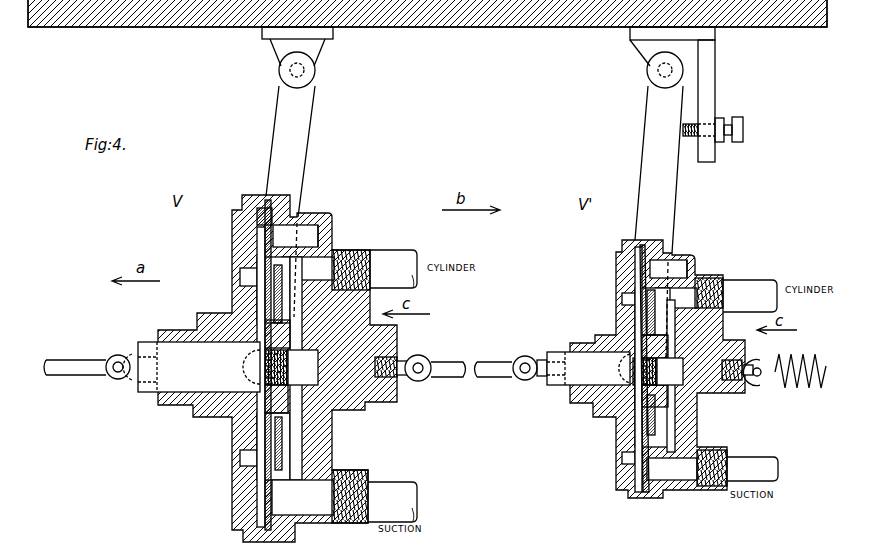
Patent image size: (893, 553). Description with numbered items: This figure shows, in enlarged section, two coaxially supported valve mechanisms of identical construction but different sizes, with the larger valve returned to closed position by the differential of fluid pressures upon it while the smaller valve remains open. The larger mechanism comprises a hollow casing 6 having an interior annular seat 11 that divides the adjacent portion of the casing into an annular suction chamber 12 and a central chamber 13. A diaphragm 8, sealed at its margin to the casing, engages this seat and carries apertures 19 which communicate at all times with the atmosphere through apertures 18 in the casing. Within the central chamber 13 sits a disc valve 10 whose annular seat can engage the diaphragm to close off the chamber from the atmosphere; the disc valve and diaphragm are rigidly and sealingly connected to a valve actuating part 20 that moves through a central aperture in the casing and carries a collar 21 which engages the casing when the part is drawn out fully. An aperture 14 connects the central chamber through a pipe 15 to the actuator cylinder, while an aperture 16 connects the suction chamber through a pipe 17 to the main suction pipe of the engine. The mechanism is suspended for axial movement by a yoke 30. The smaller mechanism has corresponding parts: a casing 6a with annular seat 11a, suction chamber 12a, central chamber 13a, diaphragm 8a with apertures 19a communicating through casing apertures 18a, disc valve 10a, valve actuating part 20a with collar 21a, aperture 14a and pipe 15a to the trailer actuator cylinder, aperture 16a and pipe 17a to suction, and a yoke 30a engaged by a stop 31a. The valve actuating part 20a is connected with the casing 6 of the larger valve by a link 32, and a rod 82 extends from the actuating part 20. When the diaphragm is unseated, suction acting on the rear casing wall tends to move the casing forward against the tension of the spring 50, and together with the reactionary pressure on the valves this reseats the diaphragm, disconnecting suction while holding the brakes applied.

The hollow casing 6 is at (302, 222).
The diaphragm 8 is at (262, 243).
The disc valve 10 is at (286, 298).
The annular seat 11 is at (333, 229).
The annular suction chamber 12 is at (306, 505).
The central chamber 13 is at (297, 422).
The aperture 14 is at (365, 249).
The pipe 15 is at (400, 254).
The aperture 16 is at (357, 477).
The pipe 17 is at (397, 487).
The apertures 18 is at (243, 275).
The apertures 19 is at (268, 299).
The valve actuating part 20 is at (150, 390).
The collar 21 is at (262, 396).
The yoke 30 is at (273, 148).
The link 32 is at (463, 364).
The connecting rod 82 is at (74, 362).
The hollow casing 6a is at (673, 258).
The diaphragm 8a is at (633, 268).
The disc valve 10a is at (712, 318).
The annular seat 11a is at (698, 265).
The annular suction chamber 12a is at (684, 478).
The central chamber 13a is at (698, 416).
The aperture 14a is at (737, 280).
The pipe 15a is at (778, 285).
The aperture 16a is at (728, 452).
The pipe 17a is at (762, 460).
The apertures 18a is at (623, 298).
The apertures 19a is at (642, 318).
The valve actuating part 20a is at (561, 392).
The collar 21a is at (640, 408).
The yoke 30a is at (642, 146).
The stop 31a is at (690, 138).
The spring 50 is at (800, 356).